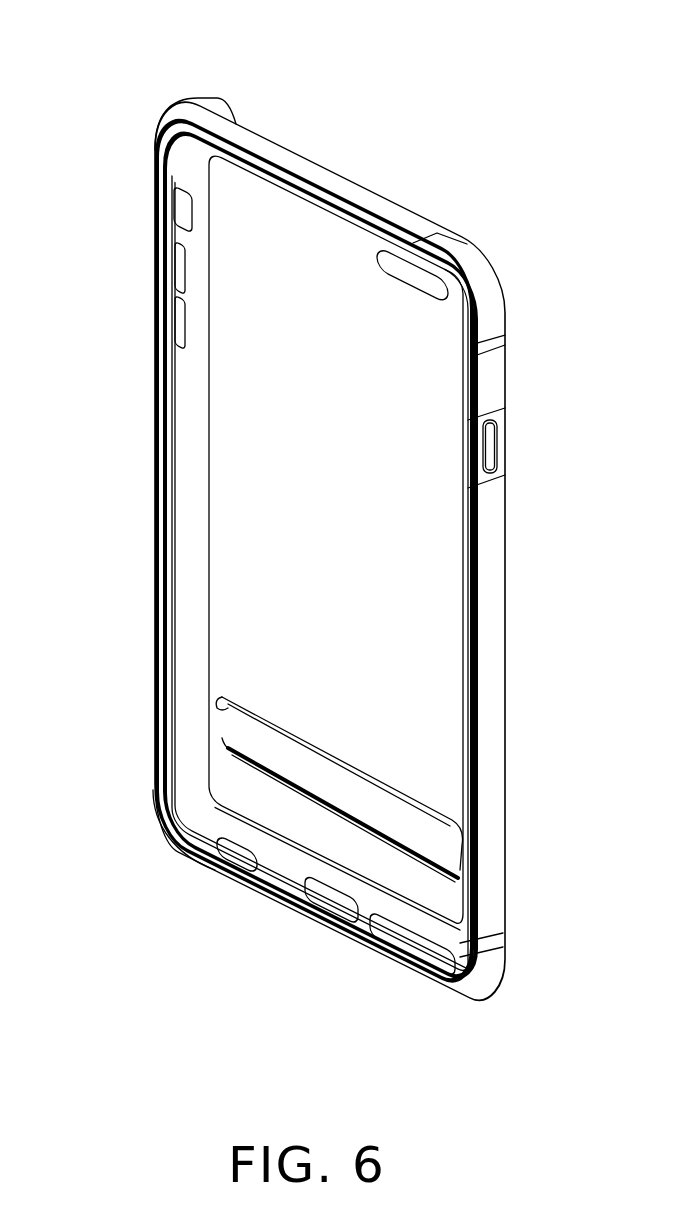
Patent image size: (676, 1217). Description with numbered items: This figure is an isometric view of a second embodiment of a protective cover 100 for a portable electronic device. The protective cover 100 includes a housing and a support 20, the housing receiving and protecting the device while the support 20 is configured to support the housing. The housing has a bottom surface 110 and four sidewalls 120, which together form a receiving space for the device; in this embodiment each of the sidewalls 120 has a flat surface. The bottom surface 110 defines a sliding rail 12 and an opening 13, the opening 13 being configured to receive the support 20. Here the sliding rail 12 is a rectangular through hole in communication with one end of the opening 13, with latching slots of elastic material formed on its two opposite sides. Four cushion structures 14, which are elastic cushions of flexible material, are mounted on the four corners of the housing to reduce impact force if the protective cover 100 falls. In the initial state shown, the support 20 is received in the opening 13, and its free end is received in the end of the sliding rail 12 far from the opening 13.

The protective cover 100 is at (260, 44).
The bottom surface 110 is at (222, 543).
The sidewalls 120 is at (185, 431).
The cushion structure 14 is at (477, 279).
The sliding rail 12 is at (445, 808).
The opening 13 is at (228, 698).
The support 20 is at (432, 855).